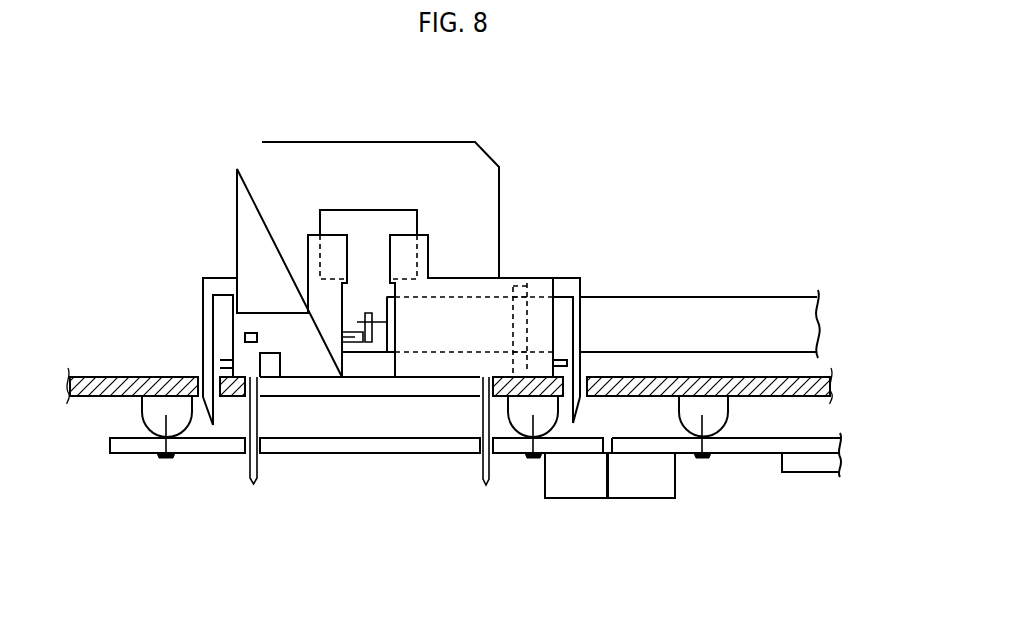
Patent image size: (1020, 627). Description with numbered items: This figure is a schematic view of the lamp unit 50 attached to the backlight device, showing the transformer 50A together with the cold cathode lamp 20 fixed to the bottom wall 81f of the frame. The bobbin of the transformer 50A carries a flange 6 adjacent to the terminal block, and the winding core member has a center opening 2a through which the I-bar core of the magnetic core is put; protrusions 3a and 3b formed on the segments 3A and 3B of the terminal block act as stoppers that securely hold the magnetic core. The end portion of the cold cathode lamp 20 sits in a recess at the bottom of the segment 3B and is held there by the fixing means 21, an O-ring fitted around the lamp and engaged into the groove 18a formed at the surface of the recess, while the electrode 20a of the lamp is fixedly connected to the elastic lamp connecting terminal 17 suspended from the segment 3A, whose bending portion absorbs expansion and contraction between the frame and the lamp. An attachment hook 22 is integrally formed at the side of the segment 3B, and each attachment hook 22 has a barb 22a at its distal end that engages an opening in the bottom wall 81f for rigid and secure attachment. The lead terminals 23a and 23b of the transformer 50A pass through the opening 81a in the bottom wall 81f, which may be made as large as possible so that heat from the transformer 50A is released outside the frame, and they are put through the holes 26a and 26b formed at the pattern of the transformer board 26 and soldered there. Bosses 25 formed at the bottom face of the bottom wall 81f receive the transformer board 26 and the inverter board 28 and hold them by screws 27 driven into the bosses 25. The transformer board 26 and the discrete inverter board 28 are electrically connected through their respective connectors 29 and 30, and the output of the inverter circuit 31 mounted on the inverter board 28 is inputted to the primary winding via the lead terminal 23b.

The center opening 2a is at (367, 218).
The protrusion 3a is at (310, 245).
The protrusion 3b is at (428, 242).
The segment 3A is at (283, 327).
The segment 3B is at (468, 287).
The flange 6 is at (390, 152).
The lamp connecting terminal 17 is at (355, 342).
The groove 18a is at (525, 322).
The cold cathode lamp 20 is at (729, 312).
The electrode 20a is at (382, 325).
The fixing means 21 is at (540, 302).
The attachment hook 22 is at (208, 322).
The barb 22a is at (208, 430).
The lead terminal 23a is at (252, 484).
The lead terminal 23b is at (486, 486).
The boss 25 is at (142, 408).
The transformer board 26 is at (400, 445).
The hole 26a is at (262, 455).
The hole 26b is at (477, 446).
The screw 27 is at (163, 460).
The inverter board 28 is at (760, 448).
The connector 29 is at (587, 491).
The connector 30 is at (645, 488).
The inverter circuit 31 is at (814, 469).
The lamp unit 50 is at (507, 183).
The transformer 50A is at (247, 208).
The opening 81a is at (317, 385).
The bottom wall 81f is at (755, 393).